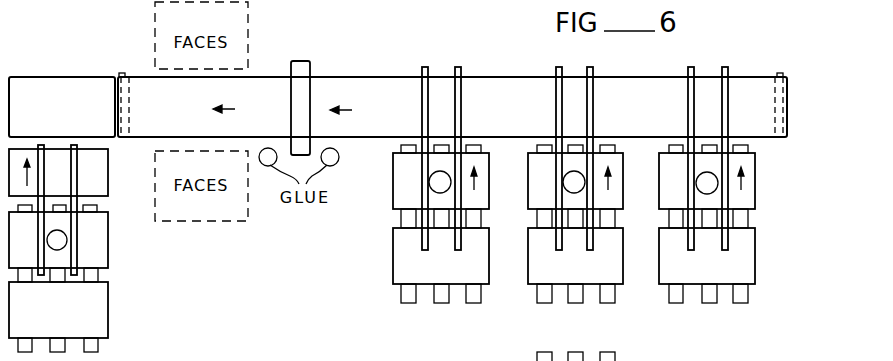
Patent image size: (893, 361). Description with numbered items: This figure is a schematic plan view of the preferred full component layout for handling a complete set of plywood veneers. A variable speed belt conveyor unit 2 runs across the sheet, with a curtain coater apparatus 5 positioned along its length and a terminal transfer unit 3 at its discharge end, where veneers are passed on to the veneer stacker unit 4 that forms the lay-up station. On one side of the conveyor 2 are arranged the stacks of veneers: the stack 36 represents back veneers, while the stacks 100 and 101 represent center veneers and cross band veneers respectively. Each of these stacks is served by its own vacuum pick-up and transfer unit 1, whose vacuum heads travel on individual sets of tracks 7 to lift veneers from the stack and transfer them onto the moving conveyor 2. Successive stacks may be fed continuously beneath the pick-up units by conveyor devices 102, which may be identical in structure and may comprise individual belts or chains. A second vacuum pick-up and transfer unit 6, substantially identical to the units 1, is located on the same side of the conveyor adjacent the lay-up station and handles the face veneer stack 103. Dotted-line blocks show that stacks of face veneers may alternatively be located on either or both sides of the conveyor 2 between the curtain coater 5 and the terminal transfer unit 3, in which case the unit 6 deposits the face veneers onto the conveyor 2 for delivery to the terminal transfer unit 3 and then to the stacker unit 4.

The vacuum pick-up and transfer unit 1 is at (430, 180).
The variable speed belt conveyor unit 2 is at (376, 77).
The terminal transfer unit 3 is at (60, 85).
The veneer stacker unit 4 is at (97, 179).
The curtain coater apparatus 5 is at (300, 68).
The second vacuum pick-up and transfer unit 6 is at (67, 240).
The tracks 7 is at (457, 109).
The stack of back veneers 36 is at (488, 246).
The stack of center veneers 100 is at (622, 240).
The stack of cross band veneers 101 is at (748, 249).
The conveyor devices 102 is at (537, 297).
The face veneer stack 103 is at (105, 258).